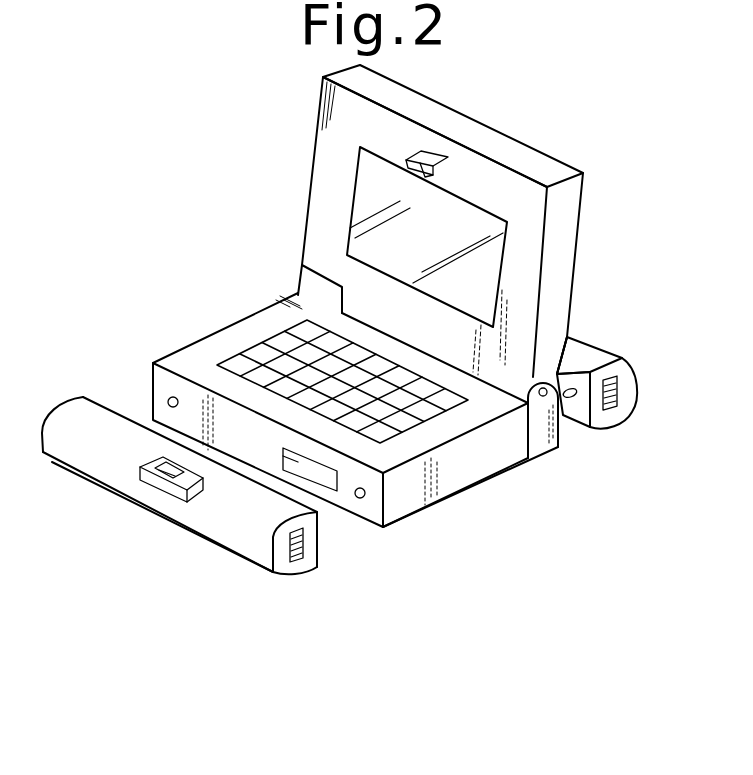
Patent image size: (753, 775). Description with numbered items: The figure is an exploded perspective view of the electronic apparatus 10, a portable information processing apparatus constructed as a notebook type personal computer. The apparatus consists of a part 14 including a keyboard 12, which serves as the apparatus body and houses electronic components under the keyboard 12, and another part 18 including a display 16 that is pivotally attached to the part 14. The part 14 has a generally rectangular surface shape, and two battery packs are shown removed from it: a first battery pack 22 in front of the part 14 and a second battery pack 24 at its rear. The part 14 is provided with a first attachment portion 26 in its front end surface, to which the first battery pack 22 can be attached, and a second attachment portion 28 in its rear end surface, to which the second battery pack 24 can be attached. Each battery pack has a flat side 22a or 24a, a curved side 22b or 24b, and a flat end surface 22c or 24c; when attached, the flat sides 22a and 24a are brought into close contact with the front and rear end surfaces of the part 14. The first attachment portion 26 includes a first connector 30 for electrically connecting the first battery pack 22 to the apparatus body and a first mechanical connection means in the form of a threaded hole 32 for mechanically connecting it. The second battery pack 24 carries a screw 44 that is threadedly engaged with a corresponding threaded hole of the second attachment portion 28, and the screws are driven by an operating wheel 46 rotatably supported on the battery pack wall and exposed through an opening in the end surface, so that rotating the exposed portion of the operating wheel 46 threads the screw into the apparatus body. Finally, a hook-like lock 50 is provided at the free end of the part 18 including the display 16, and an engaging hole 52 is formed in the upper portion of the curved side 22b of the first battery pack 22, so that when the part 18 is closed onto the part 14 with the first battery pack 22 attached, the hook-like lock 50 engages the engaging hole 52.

The electronic apparatus 10 is at (537, 135).
The keyboard 12 is at (396, 407).
The part including the keyboard 14 is at (470, 417).
The display 16 is at (456, 212).
The part including the display 18 is at (552, 170).
The first battery pack 22 is at (203, 514).
The flat side 22a is at (317, 541).
The curved side 22b is at (208, 508).
The flat end surface 22c is at (283, 567).
The second battery pack 24 is at (614, 367).
The flat side 24a is at (573, 378).
The curved side 24b is at (592, 362).
The flat end surface 24c is at (627, 388).
The first attachment portion 26 is at (353, 553).
The second attachment portion 28 is at (569, 448).
The first connector 30 is at (283, 456).
The first mechanical connection means (threaded hole) 32 is at (167, 402).
The screw 44 is at (568, 397).
The operating wheel 46 is at (613, 410).
The hook-like lock 50 is at (424, 155).
The engaging hole 52 is at (157, 472).